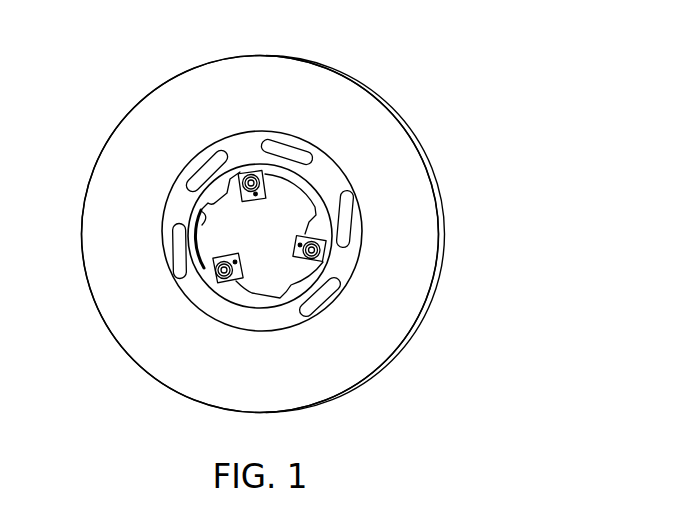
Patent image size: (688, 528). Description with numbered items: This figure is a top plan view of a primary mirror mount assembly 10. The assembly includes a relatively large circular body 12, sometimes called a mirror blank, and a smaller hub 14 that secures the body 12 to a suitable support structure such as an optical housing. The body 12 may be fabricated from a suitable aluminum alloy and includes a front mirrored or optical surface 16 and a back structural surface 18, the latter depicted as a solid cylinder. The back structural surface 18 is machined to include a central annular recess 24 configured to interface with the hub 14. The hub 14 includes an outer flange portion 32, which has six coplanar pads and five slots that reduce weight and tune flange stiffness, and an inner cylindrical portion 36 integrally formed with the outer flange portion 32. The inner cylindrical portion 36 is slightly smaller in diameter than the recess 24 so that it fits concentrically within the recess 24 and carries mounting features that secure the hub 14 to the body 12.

The primary mirror mount assembly 10 is at (281, 210).
The body 12 is at (102, 125).
The hub 14 is at (341, 323).
The front mirrored or optical surface 16 is at (446, 250).
The back structural surface 18 is at (272, 91).
The central annular recess 24 is at (213, 243).
The outer flange portion 32 is at (205, 302).
The inner cylindrical portion 36 is at (200, 203).